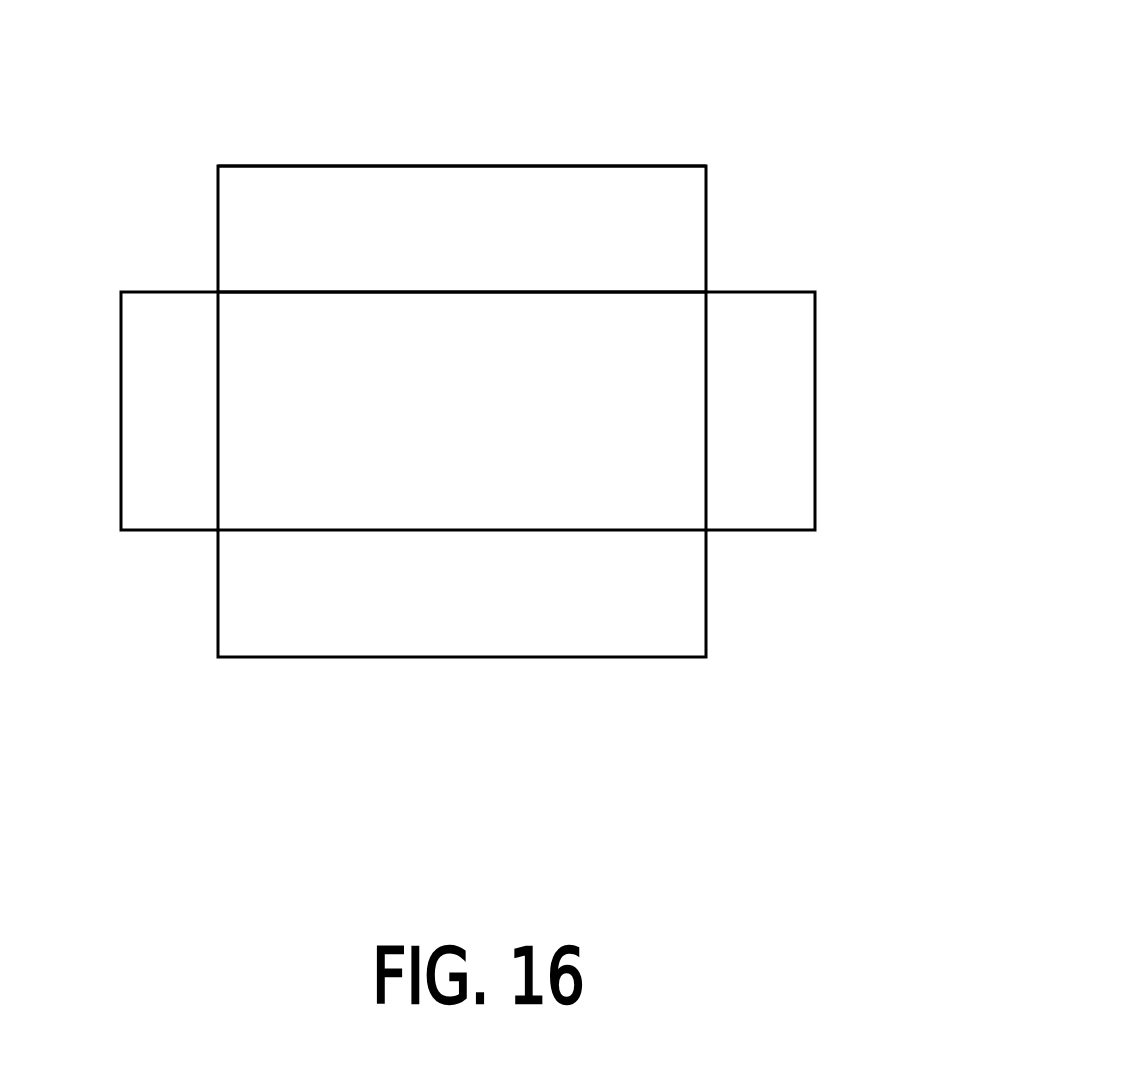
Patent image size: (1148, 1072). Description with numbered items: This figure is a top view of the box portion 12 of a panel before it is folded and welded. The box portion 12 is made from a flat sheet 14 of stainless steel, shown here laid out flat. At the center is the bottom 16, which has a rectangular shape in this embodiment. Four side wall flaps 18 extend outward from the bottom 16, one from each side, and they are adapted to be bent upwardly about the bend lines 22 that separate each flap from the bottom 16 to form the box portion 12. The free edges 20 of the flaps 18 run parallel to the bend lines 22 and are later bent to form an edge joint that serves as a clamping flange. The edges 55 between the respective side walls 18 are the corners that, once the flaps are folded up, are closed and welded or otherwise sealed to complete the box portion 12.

The bottom portion of the box 12 is at (572, 122).
The flat sheet 14 is at (706, 232).
The bottom 16 is at (492, 457).
The side wall flaps 18 is at (767, 418).
The free edges 20 is at (348, 166).
The bend lines 22 is at (327, 293).
The edges 55 is at (158, 266).